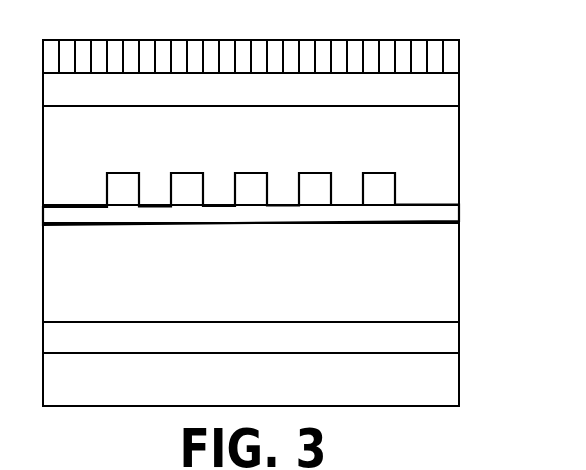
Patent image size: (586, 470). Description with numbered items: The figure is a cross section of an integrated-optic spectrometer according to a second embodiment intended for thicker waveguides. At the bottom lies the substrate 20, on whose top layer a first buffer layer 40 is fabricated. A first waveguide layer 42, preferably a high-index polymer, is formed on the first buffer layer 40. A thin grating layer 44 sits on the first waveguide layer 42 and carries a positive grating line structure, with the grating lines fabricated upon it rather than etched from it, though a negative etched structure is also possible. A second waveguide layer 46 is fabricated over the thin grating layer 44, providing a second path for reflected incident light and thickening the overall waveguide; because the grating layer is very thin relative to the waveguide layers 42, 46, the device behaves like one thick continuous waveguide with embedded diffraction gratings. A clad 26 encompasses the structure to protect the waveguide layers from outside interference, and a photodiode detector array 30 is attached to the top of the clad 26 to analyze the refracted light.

The photodiode detector array 30 is at (460, 52).
The clad 26 is at (263, 102).
The second waveguide layer 46 is at (263, 152).
The thin grating layer 44 is at (460, 211).
The first waveguide layer 42 is at (263, 284).
The first buffer layer 40 is at (263, 348).
The substrate 20 is at (263, 384).